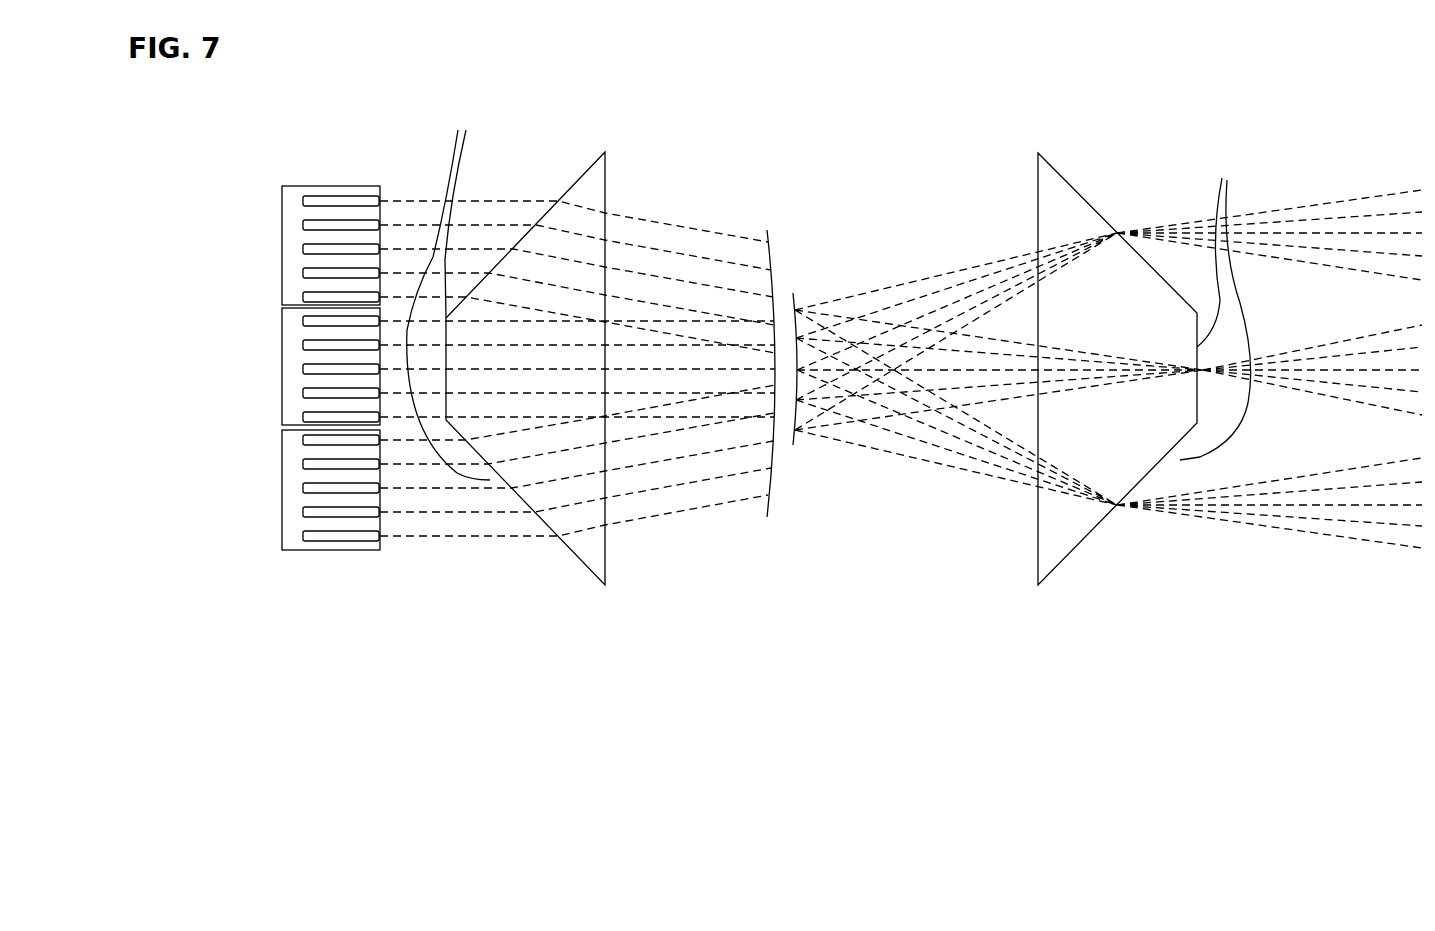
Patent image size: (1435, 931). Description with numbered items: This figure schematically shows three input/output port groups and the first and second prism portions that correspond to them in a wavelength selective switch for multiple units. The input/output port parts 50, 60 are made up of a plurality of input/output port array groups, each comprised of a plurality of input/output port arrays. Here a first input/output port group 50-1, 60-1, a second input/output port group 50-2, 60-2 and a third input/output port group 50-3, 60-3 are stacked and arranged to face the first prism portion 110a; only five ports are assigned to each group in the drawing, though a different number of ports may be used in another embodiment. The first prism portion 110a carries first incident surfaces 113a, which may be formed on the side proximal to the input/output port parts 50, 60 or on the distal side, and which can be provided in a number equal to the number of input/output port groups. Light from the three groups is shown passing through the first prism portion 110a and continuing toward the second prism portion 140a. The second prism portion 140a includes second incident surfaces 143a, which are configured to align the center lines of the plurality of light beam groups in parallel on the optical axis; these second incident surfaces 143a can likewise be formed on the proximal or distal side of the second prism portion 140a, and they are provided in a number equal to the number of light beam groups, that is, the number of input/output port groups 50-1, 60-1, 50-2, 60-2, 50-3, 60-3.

The input/output port part 50 is at (246, 368).
The input/output port part 60 is at (182, 522).
The first input/output port group 50-1 is at (282, 245).
The first input/output port group 60-1 is at (275, 198).
The second input/output port group 50-2 is at (282, 366).
The second input/output port group 60-2 is at (275, 312).
The third input/output port group 50-3 is at (282, 490).
The third input/output port group 60-3 is at (275, 432).
The first prism portion 110a is at (583, 251).
The first incident surface 113a is at (543, 203).
The second prism portion 140a is at (1099, 279).
The second incident surface 143a is at (1167, 283).